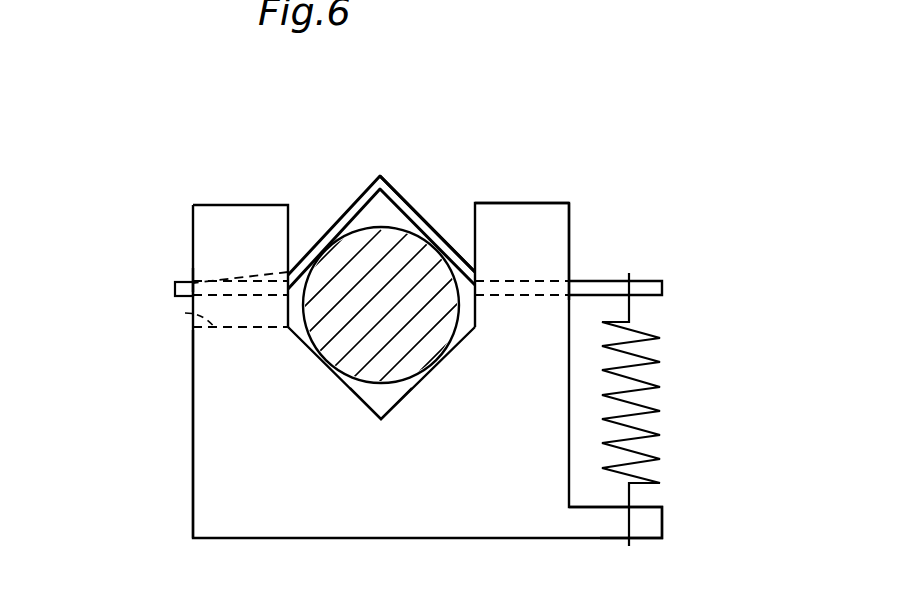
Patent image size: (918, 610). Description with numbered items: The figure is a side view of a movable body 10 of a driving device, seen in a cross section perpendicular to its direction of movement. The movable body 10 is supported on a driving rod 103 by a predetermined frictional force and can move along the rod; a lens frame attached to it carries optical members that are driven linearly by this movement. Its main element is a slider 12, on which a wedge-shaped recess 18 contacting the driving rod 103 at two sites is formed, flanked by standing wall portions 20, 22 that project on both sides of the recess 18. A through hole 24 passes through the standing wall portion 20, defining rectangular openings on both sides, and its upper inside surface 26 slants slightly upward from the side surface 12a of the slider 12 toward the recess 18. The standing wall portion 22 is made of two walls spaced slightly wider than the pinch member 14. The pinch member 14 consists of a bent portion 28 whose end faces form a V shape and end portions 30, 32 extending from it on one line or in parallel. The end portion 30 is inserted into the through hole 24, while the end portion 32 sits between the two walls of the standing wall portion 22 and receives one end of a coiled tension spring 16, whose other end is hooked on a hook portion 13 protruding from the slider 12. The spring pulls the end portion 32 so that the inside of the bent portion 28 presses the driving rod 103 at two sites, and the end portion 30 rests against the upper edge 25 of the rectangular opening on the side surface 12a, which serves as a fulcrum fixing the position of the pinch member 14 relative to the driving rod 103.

The movable body 10 is at (578, 215).
The slider 12 is at (193, 460).
The side surface 12a is at (193, 388).
The hook portion 13 is at (651, 539).
The pinch member 14 is at (403, 188).
The coiled tension spring 16 is at (658, 410).
The wedge-shaped recess 18 is at (363, 402).
The standing wall portion 20 is at (193, 222).
The standing wall portion 22 is at (569, 243).
The through hole 24 is at (185, 313).
The upper edge 25 is at (193, 279).
The upper inside surface 26 is at (248, 273).
The bent portion 28 is at (427, 220).
The end portion 30 is at (175, 296).
The end portion 32 is at (650, 294).
The driving rod 103 is at (358, 225).